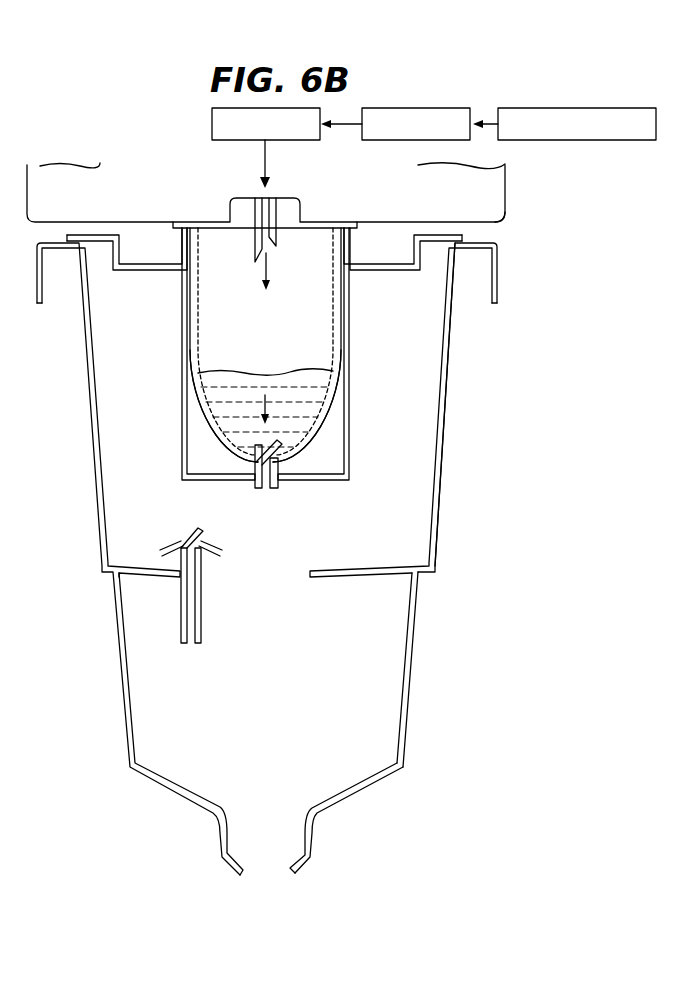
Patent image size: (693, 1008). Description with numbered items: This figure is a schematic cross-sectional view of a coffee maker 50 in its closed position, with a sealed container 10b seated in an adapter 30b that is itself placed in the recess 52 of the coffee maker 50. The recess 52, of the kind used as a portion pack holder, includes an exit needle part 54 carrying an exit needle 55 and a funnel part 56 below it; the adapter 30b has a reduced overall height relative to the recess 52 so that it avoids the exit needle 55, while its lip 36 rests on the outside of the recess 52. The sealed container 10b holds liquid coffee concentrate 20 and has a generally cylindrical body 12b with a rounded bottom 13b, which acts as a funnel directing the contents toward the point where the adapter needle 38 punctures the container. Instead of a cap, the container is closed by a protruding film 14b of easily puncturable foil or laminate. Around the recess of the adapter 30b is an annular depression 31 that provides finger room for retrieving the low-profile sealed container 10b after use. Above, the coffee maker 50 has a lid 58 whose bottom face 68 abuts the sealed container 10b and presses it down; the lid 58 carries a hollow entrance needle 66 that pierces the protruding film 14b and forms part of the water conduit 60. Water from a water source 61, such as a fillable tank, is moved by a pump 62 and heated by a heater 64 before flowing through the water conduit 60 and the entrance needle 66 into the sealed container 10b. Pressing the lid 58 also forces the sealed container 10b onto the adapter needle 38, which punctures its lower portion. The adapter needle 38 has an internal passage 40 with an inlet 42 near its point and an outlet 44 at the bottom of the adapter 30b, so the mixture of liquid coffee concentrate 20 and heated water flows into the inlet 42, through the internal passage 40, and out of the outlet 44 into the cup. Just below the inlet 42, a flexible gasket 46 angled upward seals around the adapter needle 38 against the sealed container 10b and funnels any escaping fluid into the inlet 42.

The sealed container 10b is at (195, 420).
The body 12b is at (348, 405).
The rounded bottom 13b is at (215, 442).
The protruding film 14b is at (180, 222).
The liquid coffee concentrate 20 is at (237, 383).
The adapter 30b is at (104, 362).
The annular depression 31 is at (370, 252).
The lip 36 is at (72, 234).
The adapter needle 38 is at (237, 474).
The internal passage 40 is at (252, 478).
The inlet 42 is at (300, 452).
The outlet 44 is at (264, 490).
The gasket 46 is at (286, 480).
The coffee maker 50 is at (538, 192).
The recess 52 is at (414, 523).
The exit needle part 54 is at (445, 427).
The exit needle 55 is at (185, 534).
The funnel part 56 is at (412, 678).
The lid 58 is at (62, 166).
The water conduit 60 is at (270, 200).
The water source 61 is at (578, 108).
The pump 62 is at (422, 108).
The heater 64 is at (212, 123).
The entrance needle 66 is at (255, 251).
The bottom face 68 is at (493, 222).